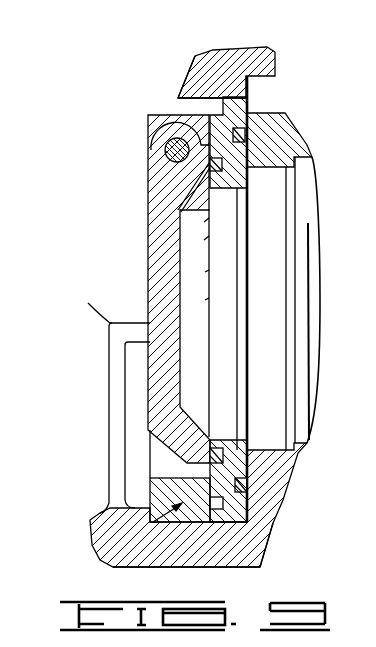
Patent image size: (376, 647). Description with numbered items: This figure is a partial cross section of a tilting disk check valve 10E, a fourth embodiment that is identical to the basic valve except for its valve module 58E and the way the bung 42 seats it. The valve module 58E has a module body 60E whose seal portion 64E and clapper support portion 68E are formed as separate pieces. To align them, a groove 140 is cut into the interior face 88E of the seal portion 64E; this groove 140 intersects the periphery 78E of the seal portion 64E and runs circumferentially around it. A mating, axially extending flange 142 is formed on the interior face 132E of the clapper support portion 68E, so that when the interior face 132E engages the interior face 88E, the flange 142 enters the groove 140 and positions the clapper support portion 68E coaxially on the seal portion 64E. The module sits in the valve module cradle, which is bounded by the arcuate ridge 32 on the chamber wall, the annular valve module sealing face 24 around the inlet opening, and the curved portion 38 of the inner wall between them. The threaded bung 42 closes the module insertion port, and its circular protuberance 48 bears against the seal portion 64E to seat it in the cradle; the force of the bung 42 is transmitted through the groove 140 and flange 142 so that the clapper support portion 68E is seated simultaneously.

The valve 10E is at (282, 48).
The bung 42 is at (235, 52).
The circular protuberance 48 is at (190, 90).
The seal portion 64E is at (249, 114).
The valve module sealing face 24 is at (243, 170).
The valve module 58E is at (148, 255).
The arcuate ridge 32 is at (137, 371).
The interior face of the seal portion 88E is at (209, 443).
The axially extending flange 142 is at (152, 485).
The clapper support portion 68E is at (160, 502).
The module body 60E is at (150, 528).
The interior face of the clapper support portion 132E is at (252, 500).
The periphery of the seal portion 78E is at (230, 524).
The groove 140 is at (250, 545).
The portion of the inner wall 38 is at (183, 521).